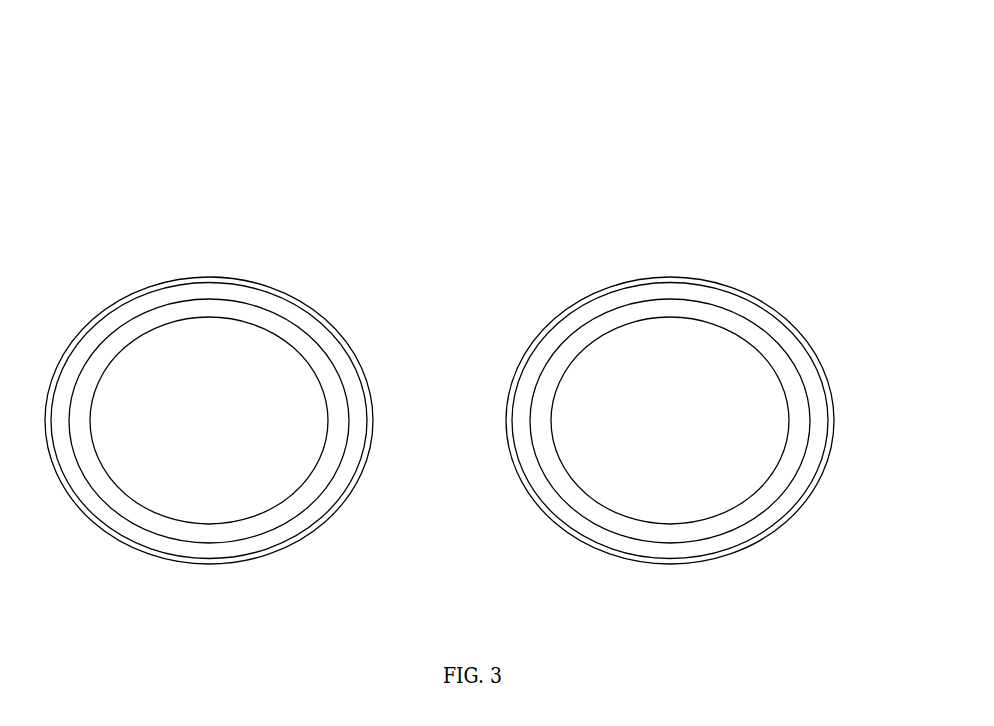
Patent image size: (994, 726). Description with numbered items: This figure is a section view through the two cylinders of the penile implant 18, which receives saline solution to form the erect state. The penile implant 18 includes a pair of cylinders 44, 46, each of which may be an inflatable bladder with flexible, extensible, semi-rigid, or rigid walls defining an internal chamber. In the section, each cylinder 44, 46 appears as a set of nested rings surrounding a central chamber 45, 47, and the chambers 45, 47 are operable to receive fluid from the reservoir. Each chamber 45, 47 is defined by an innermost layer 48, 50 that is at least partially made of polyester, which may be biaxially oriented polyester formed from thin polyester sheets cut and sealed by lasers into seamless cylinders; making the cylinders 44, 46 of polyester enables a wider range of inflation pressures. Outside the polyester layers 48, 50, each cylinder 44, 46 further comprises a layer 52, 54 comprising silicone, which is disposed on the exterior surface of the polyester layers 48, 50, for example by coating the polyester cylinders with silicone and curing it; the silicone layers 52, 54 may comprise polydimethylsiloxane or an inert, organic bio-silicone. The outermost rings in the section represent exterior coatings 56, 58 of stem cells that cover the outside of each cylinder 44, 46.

The penile implant 18 is at (476, 105).
The cylinder 44 is at (278, 209).
The cylinder 46 is at (729, 197).
The chamber 45 is at (213, 448).
The chamber 47 is at (666, 437).
The layer 48 is at (340, 417).
The layer 50 is at (797, 413).
The layer comprising silicone 52 is at (347, 373).
The layer comprising silicone 54 is at (805, 368).
The exterior coating of stem cells 56 is at (298, 303).
The exterior coating of stem cells 58 is at (765, 302).